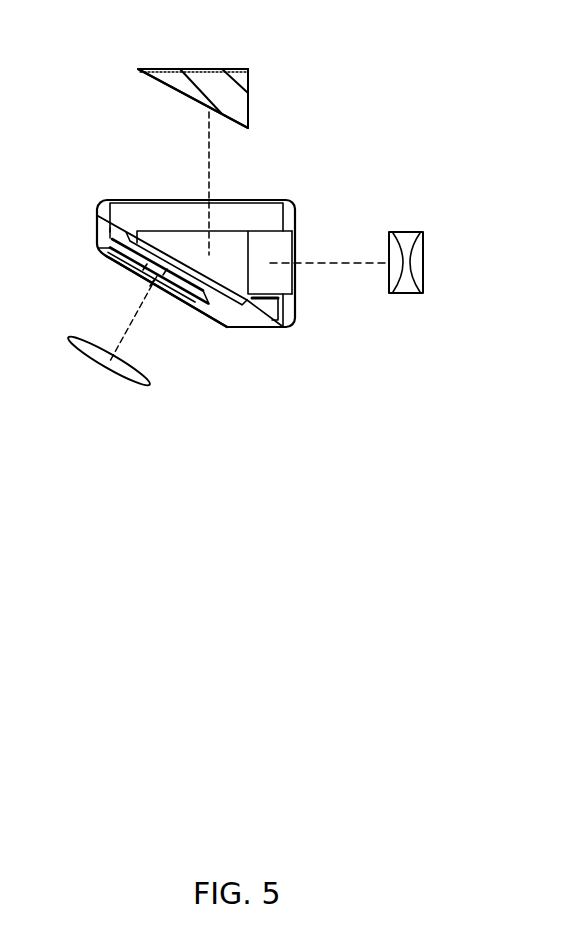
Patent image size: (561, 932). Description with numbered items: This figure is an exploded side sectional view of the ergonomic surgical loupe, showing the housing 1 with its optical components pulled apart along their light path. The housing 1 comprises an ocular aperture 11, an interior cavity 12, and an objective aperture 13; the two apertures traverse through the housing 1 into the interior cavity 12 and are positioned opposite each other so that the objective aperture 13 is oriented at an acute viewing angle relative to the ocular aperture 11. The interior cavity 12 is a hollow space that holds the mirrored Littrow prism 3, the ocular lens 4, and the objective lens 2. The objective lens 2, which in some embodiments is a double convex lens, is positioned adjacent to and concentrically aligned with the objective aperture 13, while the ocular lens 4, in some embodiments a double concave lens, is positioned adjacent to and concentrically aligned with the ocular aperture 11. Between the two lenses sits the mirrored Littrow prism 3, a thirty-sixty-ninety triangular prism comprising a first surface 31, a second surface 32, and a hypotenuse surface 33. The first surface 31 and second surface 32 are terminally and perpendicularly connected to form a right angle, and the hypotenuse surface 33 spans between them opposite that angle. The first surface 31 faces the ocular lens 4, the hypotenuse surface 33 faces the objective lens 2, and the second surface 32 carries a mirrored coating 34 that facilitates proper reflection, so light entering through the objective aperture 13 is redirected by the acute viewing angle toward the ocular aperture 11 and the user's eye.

The housing 1 is at (186, 190).
The ocular aperture 11 is at (278, 248).
The interior cavity 12 is at (217, 257).
The objective aperture 13 is at (145, 262).
The objective lens 2 is at (90, 350).
The mirrored Littrow prism 3 is at (203, 80).
The first surface 31 is at (248, 100).
The second surface 32 is at (163, 70).
The hypotenuse surface 33 is at (183, 95).
The mirrored coating 34 is at (217, 70).
The ocular lens 4 is at (423, 262).